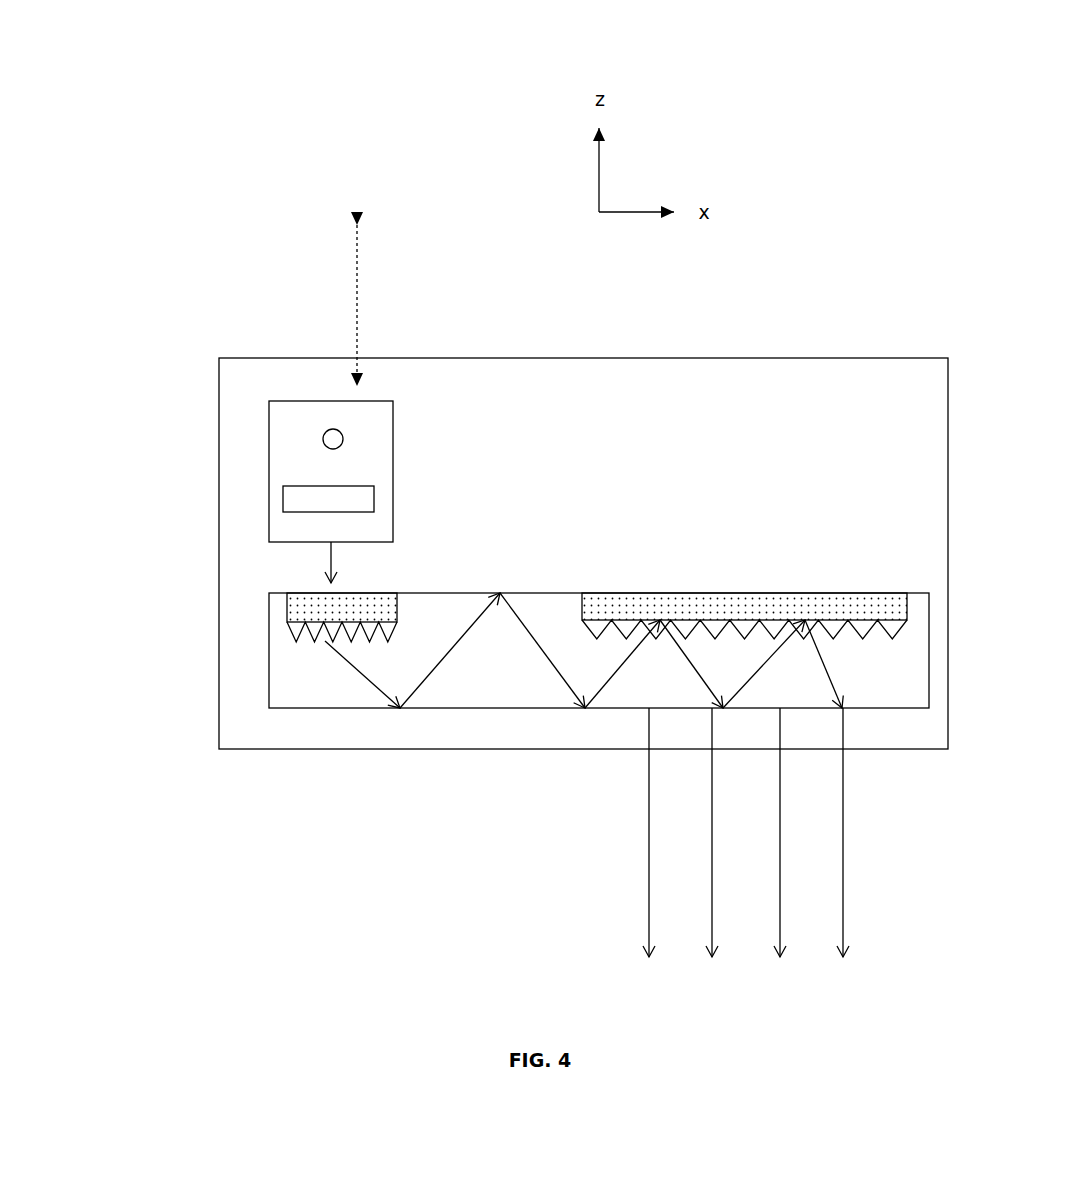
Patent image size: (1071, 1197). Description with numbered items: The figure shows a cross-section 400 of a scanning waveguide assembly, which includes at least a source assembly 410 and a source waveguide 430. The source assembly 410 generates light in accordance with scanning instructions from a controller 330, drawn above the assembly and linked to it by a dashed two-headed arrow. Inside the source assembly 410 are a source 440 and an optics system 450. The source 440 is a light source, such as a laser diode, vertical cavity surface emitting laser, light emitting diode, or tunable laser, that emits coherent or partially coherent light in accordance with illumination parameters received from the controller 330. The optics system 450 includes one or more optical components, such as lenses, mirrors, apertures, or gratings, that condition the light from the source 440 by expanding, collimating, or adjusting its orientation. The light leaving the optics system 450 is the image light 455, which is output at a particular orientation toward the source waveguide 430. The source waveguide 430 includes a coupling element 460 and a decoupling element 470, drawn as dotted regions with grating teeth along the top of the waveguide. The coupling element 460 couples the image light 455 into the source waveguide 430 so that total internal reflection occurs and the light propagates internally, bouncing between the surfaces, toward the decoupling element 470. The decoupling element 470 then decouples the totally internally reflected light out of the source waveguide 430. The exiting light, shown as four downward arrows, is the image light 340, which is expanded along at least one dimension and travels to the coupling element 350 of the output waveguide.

The cross-section 400 is at (143, 28).
The controller 330 is at (339, 203).
The source assembly 410 is at (269, 408).
The source 440 is at (343, 438).
The optics system 450 is at (374, 500).
The image light 455 is at (331, 578).
The source waveguide 430 is at (269, 660).
The coupling element 460 is at (287, 610).
The decoupling element 470 is at (766, 607).
The image light 340 is at (649, 851).
The coupling element 350 is at (753, 1081).